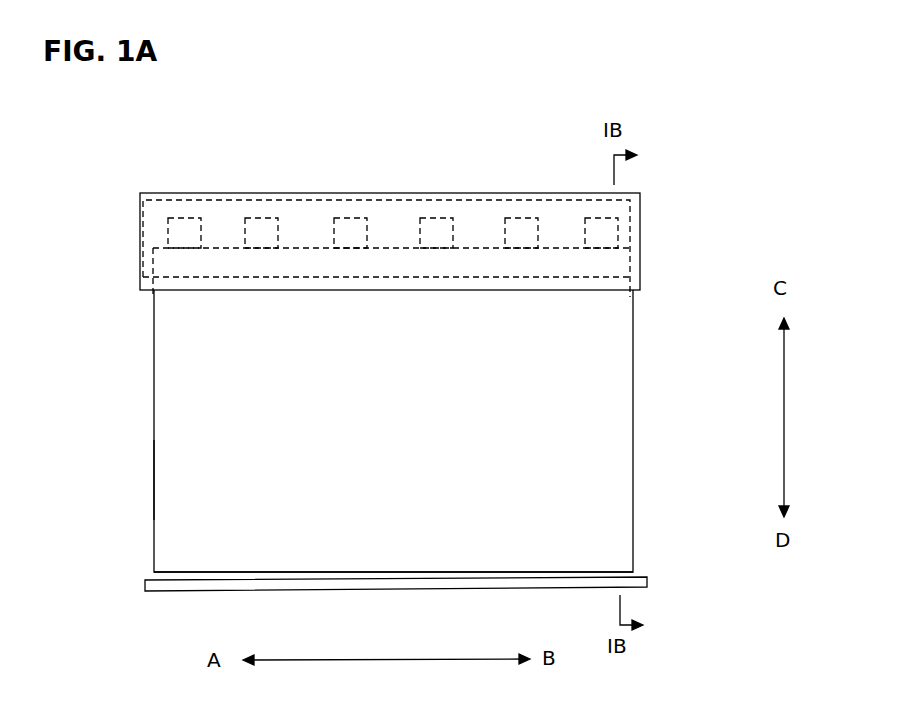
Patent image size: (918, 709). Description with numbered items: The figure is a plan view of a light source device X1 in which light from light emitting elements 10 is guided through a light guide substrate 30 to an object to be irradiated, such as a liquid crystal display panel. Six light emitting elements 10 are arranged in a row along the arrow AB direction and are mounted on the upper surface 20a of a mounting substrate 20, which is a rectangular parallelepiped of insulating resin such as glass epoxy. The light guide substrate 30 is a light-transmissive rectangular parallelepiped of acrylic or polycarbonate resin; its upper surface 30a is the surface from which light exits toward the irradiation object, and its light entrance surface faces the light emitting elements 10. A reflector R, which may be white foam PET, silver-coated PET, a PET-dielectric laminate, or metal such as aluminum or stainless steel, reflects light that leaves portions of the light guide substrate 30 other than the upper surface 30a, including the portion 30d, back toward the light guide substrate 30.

The light source device X1 is at (470, 158).
The light emitting element 10 is at (358, 230).
The mounting substrate 20 is at (399, 200).
The upper surface 20a is at (160, 218).
The light guide substrate 30 is at (155, 418).
The upper surface 30a is at (167, 505).
The portion of the light guide substrate 30d is at (180, 573).
The reflector R is at (640, 285).